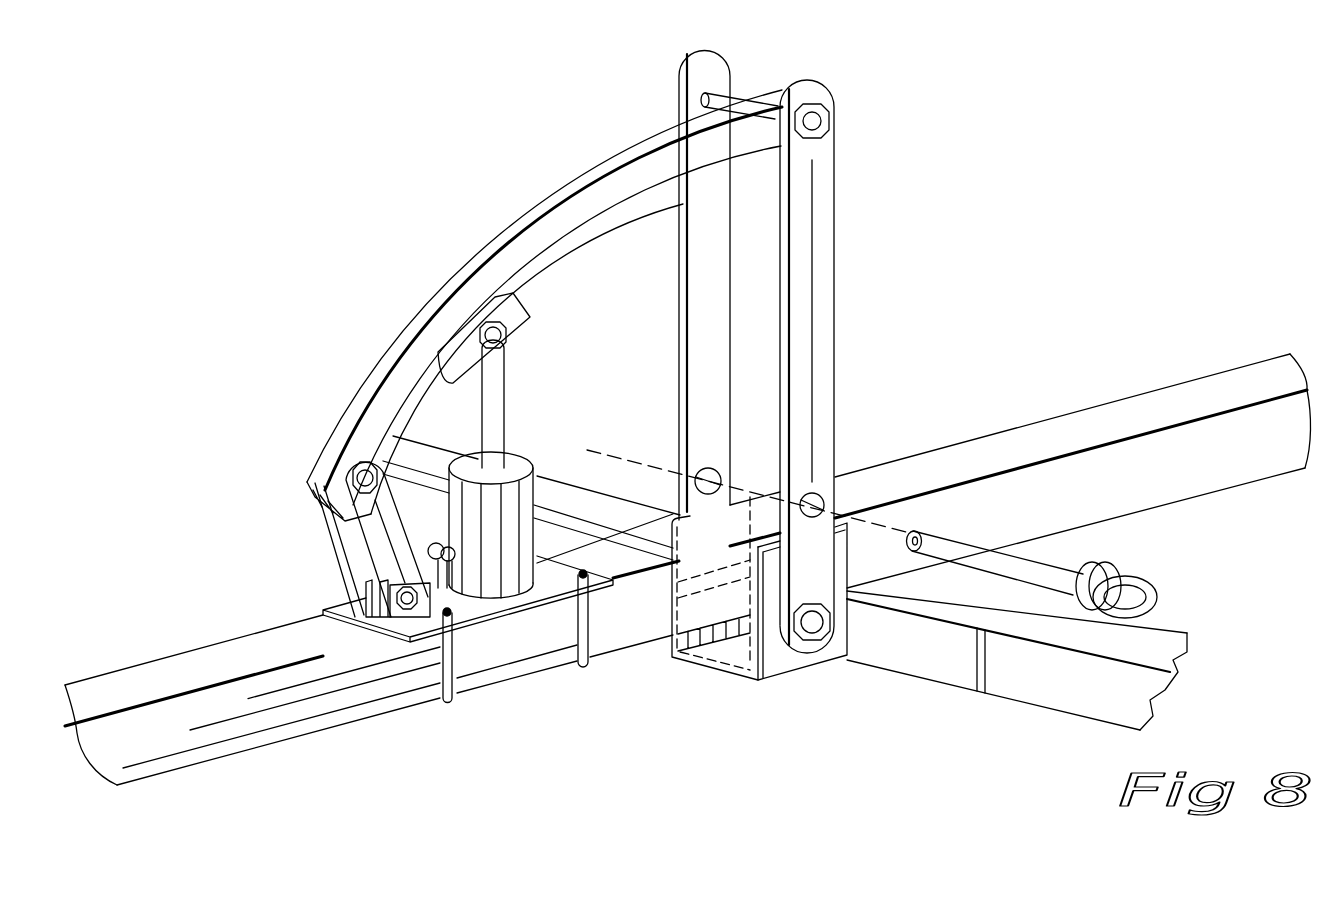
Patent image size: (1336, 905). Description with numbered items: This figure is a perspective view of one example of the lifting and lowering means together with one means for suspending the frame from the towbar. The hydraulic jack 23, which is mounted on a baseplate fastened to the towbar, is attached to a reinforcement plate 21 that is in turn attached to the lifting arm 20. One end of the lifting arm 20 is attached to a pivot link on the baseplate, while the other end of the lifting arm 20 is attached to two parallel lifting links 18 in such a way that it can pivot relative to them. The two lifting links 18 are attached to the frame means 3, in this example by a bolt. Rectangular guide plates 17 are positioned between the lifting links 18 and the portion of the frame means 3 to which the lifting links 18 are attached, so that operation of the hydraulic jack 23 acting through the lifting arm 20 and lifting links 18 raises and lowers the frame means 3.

The frame means 3 is at (930, 662).
The rectangular guide plates 17 is at (778, 667).
The lifting links 18 is at (818, 305).
The lifting arm 20 is at (553, 242).
The reinforcement plate 21 is at (513, 321).
The hydraulic jack 23 is at (520, 497).